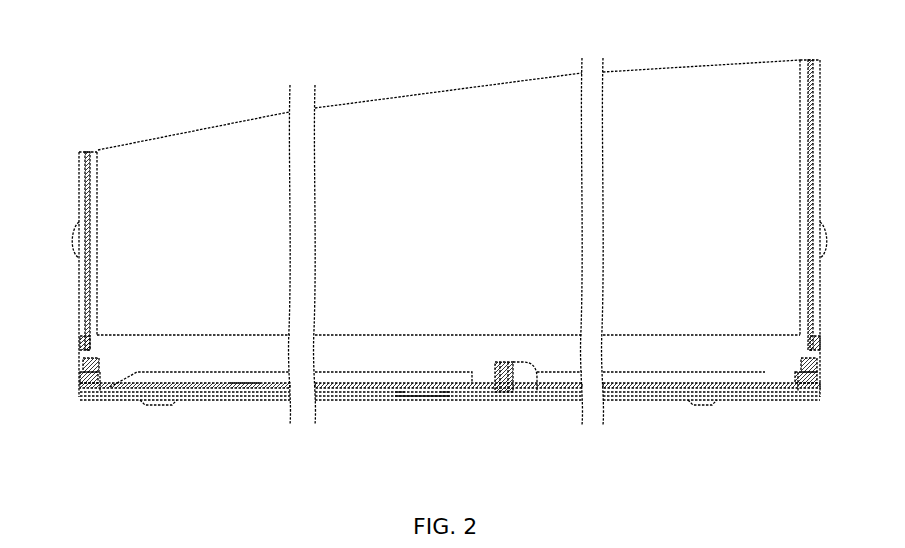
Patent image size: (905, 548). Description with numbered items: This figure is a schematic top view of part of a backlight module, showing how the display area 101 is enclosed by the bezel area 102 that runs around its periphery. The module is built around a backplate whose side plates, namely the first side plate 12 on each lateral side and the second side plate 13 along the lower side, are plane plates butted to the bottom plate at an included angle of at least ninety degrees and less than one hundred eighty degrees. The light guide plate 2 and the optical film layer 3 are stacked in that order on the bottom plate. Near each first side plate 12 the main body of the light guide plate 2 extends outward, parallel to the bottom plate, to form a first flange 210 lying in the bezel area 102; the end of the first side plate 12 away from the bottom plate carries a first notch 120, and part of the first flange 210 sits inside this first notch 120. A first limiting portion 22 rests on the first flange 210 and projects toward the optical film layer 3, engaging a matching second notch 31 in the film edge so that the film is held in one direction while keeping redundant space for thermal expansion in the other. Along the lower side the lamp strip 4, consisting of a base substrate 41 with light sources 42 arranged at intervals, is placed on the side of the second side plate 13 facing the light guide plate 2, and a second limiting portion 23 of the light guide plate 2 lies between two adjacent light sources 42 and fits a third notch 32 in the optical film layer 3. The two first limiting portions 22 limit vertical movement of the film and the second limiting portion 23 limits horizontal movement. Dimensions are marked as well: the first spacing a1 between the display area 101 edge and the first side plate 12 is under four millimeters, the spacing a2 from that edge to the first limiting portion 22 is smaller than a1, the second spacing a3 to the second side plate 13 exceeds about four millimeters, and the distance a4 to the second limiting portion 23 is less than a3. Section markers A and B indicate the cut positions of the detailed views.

The display area 101 is at (800, 43).
The bezel area 102 is at (98, 150).
The first spacing a1 is at (112, 128).
The spacing a2 is at (822, 323).
The second spacing a3 is at (420, 335).
The distance a4 is at (506, 335).
The first side plate 12 is at (82, 288).
The first notch 120 is at (827, 344).
The light guide plate 2 is at (757, 392).
The first flange 210 is at (88, 384).
The first limiting portion 22 is at (90, 365).
The second limiting portion 23 is at (505, 395).
The optical film layer 3 is at (690, 375).
The second notch 31 is at (104, 368).
The third notch 32 is at (535, 385).
The second side plate 13 is at (360, 400).
The lamp strip 4 is at (400, 426).
The base substrate 41 is at (400, 397).
The light sources 42 is at (446, 397).
The section line A- A is at (795, 367).
The section line B- B is at (497, 352).